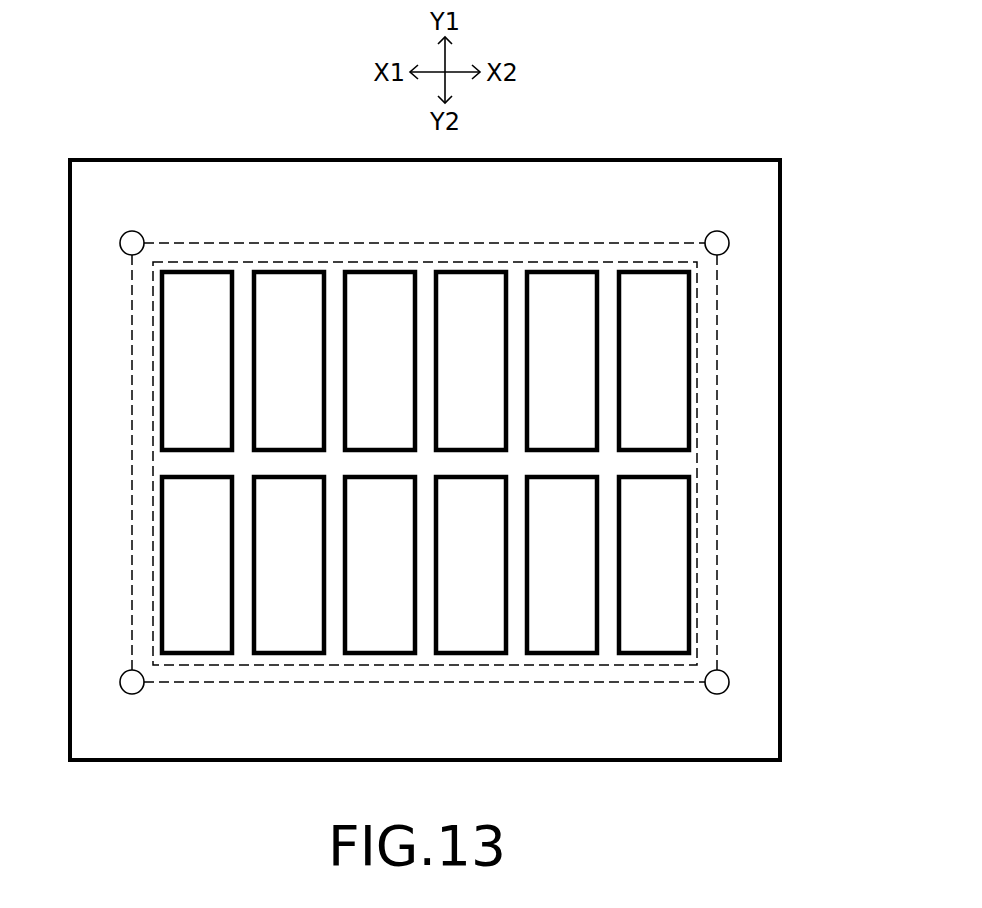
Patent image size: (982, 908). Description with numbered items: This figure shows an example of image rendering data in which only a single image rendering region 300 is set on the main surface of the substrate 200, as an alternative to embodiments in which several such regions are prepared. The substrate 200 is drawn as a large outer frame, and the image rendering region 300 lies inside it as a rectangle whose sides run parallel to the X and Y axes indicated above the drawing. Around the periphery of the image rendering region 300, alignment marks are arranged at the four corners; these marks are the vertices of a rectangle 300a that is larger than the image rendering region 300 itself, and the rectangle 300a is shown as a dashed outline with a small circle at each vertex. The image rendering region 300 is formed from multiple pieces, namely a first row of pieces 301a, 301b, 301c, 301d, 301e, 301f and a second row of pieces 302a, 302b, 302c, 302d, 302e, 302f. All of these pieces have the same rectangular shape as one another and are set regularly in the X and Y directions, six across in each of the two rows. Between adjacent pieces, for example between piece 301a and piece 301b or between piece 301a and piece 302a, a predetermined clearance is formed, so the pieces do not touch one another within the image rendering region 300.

The substrate 200 is at (152, 174).
The image rendering region 300 is at (522, 260).
The rectangle 300a is at (331, 243).
The piece 301a is at (197, 361).
The piece 301b is at (289, 361).
The piece 301c is at (380, 361).
The piece 301d is at (471, 361).
The piece 301e is at (562, 361).
The piece 301f is at (654, 361).
The piece 302a is at (197, 565).
The piece 302b is at (289, 565).
The piece 302c is at (380, 565).
The piece 302d is at (471, 565).
The piece 302e is at (562, 565).
The piece 302f is at (654, 565).